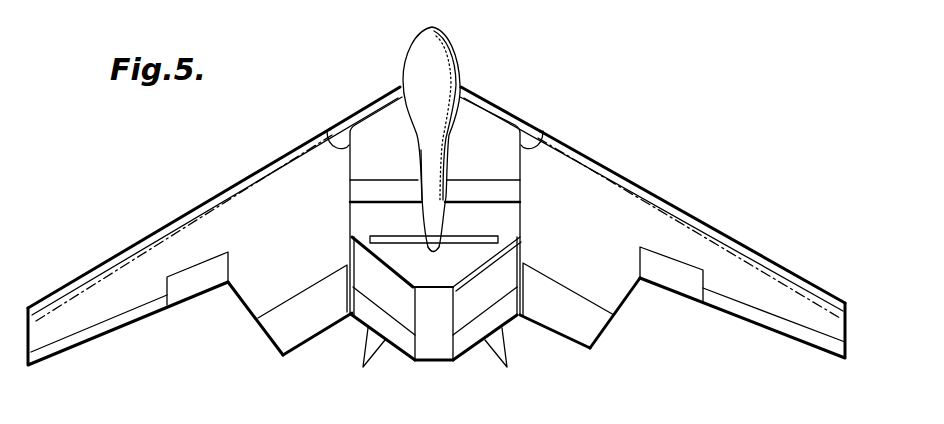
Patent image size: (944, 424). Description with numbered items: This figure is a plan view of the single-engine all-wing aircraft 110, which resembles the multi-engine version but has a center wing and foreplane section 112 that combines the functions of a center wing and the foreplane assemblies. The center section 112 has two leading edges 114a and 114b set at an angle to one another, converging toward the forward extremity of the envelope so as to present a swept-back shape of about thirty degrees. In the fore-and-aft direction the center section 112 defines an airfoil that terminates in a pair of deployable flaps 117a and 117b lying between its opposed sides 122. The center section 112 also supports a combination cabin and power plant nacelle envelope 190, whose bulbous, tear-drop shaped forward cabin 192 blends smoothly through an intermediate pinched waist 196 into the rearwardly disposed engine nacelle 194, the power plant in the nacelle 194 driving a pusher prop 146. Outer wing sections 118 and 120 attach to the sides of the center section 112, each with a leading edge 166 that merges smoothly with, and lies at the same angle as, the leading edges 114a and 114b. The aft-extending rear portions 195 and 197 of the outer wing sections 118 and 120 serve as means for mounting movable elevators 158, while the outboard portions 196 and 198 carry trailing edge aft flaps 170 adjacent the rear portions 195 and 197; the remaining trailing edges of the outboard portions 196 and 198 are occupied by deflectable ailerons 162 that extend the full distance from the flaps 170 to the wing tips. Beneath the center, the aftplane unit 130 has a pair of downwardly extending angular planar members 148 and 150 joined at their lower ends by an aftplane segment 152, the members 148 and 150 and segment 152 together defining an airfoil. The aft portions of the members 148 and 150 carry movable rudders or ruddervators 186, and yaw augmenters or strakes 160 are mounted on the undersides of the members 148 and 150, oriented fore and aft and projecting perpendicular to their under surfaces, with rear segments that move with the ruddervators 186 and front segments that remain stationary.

The single-engine all-wing aircraft 110 is at (618, 97).
The center wing and foreplane section 112 is at (491, 85).
The leading edge 114a is at (372, 102).
The leading edge 114b is at (507, 110).
The deployable flap 117a is at (352, 195).
The deployable flap 117b is at (510, 192).
The outer wing section 118 is at (237, 174).
The outer wing section 120 is at (633, 170).
The opposed sides 122 is at (327, 131).
The aftplane unit 130 is at (412, 374).
The pusher prop 146 is at (410, 245).
The angular planar member 148 is at (513, 253).
The angular planar member 150 is at (362, 255).
The aftplane segment 152 is at (436, 350).
The movable elevator 158 is at (273, 330).
The yaw augmenter 160 is at (367, 343).
The deflectable aileron 162 is at (87, 337).
The leading edge 166 is at (143, 237).
The trailing edge aft flap 170 is at (185, 295).
The ruddervator 186 is at (381, 348).
The cabin and power plant nacelle envelope 190 is at (404, 40).
The forward cabin 192 is at (447, 55).
The engine nacelle 194 is at (447, 218).
The aft-extending rear portion 195 is at (247, 288).
The outboard portion 196 is at (80, 292).
The aft-extending rear portion 197 is at (617, 295).
The outboard portion 198 is at (782, 275).